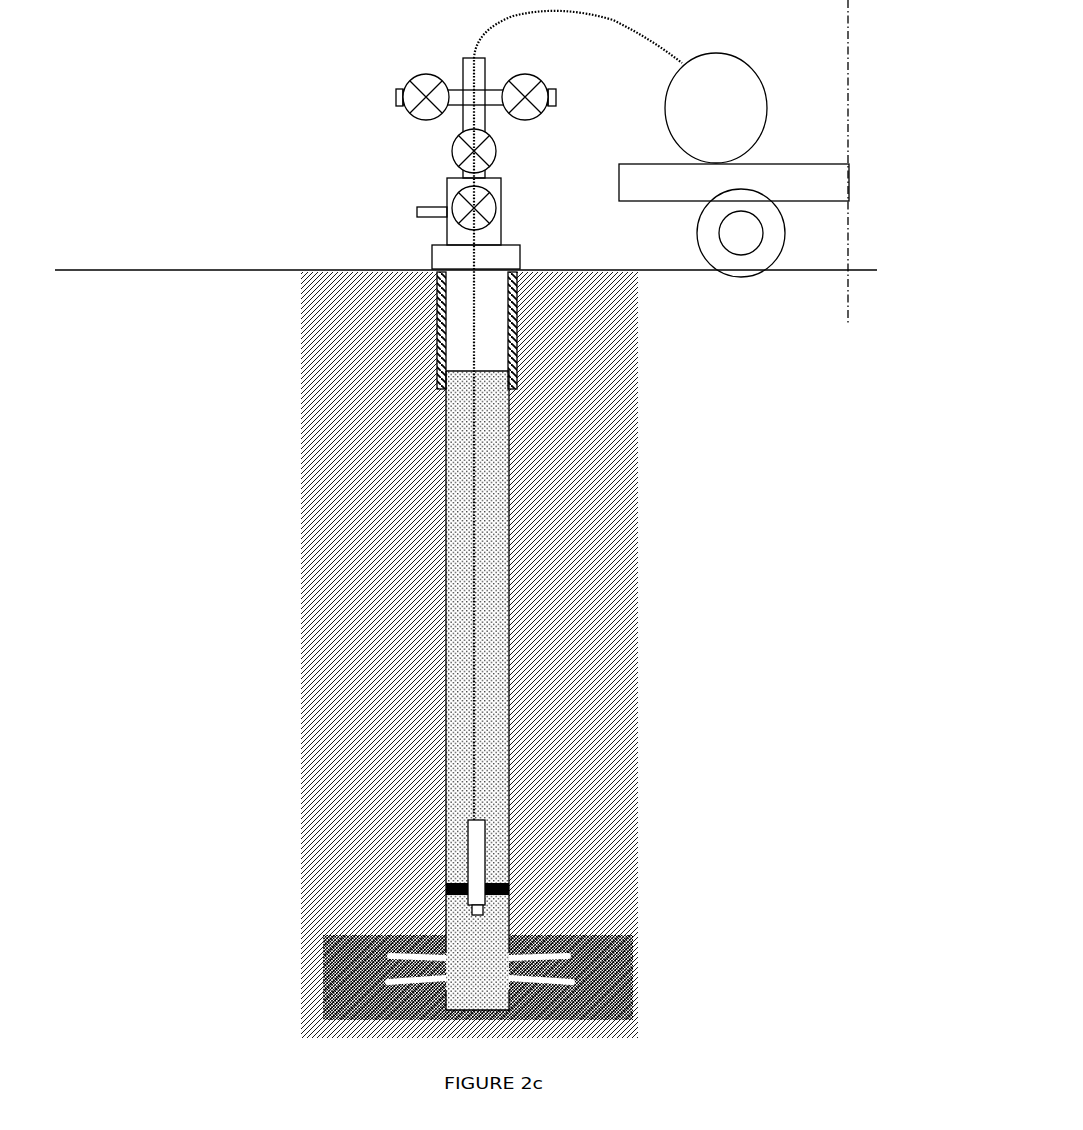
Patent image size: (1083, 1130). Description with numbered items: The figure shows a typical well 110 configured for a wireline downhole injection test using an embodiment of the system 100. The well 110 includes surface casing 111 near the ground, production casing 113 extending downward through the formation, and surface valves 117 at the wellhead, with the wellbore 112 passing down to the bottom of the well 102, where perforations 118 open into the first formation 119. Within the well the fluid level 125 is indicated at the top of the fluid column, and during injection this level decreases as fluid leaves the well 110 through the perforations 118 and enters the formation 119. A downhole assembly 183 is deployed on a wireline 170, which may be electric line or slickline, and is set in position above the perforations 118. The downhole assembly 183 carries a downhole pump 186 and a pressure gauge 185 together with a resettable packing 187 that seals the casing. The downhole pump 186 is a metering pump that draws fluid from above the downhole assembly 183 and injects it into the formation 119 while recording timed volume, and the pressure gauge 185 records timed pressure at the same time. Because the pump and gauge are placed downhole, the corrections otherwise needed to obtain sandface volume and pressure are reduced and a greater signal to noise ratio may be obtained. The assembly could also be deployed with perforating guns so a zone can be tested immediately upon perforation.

The system 100 is at (446, 683).
The wellbore bottom 102 is at (446, 933).
The well 110 is at (396, 680).
The surface casing 111 is at (518, 385).
The wellbore 112 is at (510, 430).
The production casing 113 is at (509, 680).
The surface valves 117 is at (452, 145).
The perforations 118 is at (415, 975).
The formation 119 is at (340, 957).
The fluid level 125 is at (437, 373).
The wireline 170 is at (475, 802).
The downhole assembly 183 is at (512, 887).
The pressure gauge 185 is at (483, 913).
The downhole pump 186 is at (485, 843).
The resettable packing 187 is at (446, 888).